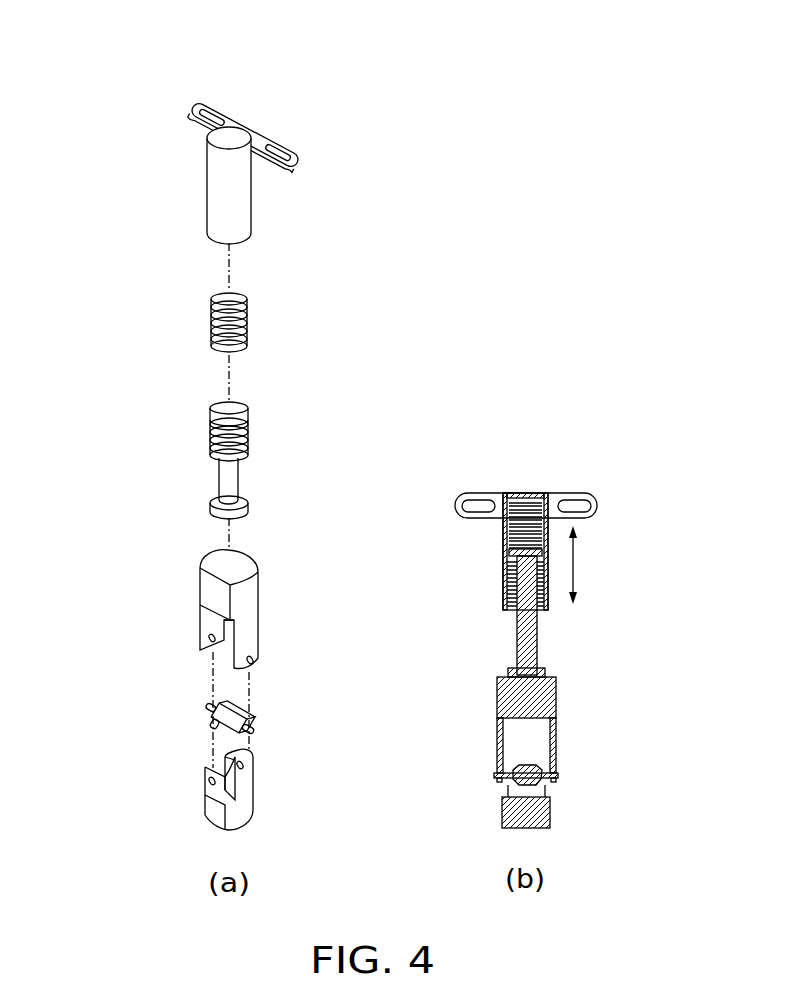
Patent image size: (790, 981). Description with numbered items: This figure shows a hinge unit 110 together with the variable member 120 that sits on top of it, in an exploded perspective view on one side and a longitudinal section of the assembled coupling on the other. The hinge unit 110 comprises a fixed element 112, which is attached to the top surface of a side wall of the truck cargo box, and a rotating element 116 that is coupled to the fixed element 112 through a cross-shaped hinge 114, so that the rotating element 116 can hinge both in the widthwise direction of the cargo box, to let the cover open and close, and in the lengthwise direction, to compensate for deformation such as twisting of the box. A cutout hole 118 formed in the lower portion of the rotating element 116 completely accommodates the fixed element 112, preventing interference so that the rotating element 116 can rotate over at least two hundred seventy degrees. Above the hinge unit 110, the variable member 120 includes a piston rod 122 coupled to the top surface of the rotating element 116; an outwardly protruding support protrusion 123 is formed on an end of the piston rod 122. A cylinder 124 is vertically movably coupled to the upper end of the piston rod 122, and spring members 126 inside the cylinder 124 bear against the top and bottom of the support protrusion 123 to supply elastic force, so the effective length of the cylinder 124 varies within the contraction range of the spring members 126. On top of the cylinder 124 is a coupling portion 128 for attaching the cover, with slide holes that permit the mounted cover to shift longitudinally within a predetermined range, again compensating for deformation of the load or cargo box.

The hinge unit 110 is at (288, 621).
The fixed element 112 is at (204, 790).
The cross-shaped hinge 114 is at (218, 710).
The rotating element 116 is at (200, 592).
The cutout hole 118 is at (222, 648).
The variable member 120 is at (292, 243).
The piston rod 122 is at (218, 470).
The support protrusion 123 is at (242, 405).
The cylinder 124 is at (207, 202).
The spring members 126 is at (213, 427).
The coupling portion 128 is at (212, 104).